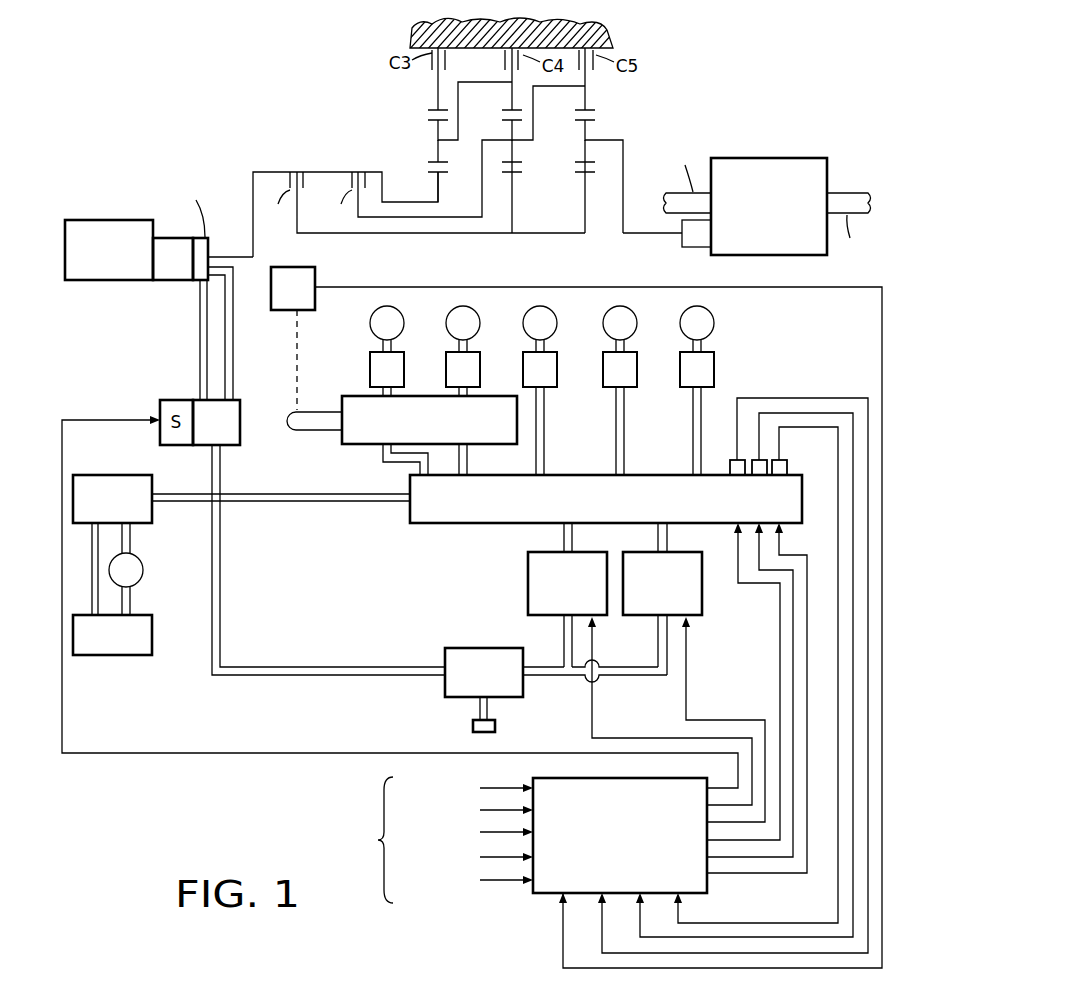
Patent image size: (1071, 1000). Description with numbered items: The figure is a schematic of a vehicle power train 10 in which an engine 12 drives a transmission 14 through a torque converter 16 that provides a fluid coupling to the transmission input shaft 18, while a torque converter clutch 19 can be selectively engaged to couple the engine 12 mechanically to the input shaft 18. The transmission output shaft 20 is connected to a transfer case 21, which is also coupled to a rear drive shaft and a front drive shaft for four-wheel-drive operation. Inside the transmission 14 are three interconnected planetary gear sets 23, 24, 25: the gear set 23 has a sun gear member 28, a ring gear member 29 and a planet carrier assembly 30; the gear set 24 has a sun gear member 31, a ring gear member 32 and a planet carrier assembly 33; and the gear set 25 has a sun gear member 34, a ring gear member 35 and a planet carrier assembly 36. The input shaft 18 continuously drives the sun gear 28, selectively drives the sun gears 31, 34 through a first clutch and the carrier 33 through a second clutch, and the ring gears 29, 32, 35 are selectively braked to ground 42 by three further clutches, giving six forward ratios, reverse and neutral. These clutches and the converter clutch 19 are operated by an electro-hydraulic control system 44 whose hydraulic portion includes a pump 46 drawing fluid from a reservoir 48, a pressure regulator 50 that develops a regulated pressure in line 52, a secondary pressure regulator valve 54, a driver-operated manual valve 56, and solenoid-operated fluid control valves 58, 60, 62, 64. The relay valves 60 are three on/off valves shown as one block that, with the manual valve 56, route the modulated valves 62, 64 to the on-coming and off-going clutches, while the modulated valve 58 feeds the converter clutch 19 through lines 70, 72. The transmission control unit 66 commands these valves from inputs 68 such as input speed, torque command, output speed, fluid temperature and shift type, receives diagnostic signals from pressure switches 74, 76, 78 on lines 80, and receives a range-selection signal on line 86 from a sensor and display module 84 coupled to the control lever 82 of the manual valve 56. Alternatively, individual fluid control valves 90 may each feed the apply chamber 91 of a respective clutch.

The vehicle power train 10 is at (266, 107).
The engine 12 is at (102, 285).
The transmission 14 is at (396, 136).
The torque converter 16 is at (163, 285).
The transmission input shaft 18 is at (268, 170).
The torque converter clutch 19 is at (210, 243).
The transmission output shaft 20 is at (640, 236).
The transfer case 21 is at (750, 157).
The planetary gear set 23 is at (452, 153).
The planetary gear set 24 is at (526, 153).
The planetary gear set 25 is at (600, 128).
The sun gear member 28 is at (430, 172).
The ring gear member 29 is at (432, 108).
The planet carrier assembly 30 is at (457, 140).
The sun gear member 31 is at (522, 180).
The ring gear member 32 is at (506, 110).
The planet carrier assembly 33 is at (532, 140).
The sun gear member 34 is at (592, 180).
The ring gear member 35 is at (596, 110).
The planet carrier assembly 36 is at (618, 147).
The ground 42 is at (612, 36).
The electro-hydraulic control system 44 is at (632, 614).
The pump 46 is at (145, 570).
The reservoir 48 is at (153, 637).
The pressure regulator 50 is at (127, 475).
The line 52 is at (305, 505).
The secondary pressure regulator valve 54 is at (445, 683).
The manual valve 56 is at (365, 447).
The solenoid-operated fluid control valve 58 is at (240, 424).
The relay valves 60 is at (430, 524).
The modulated valve 62 is at (528, 600).
The modulated valve 64 is at (705, 600).
The transmission control unit 66 is at (545, 897).
The inputs 68 is at (440, 840).
The line 70 is at (198, 372).
The line 72 is at (233, 372).
The pressure switch 74 is at (737, 460).
The pressure switch 76 is at (755, 460).
The pressure switch 78 is at (787, 468).
The lines 80 is at (826, 426).
The control lever 82 is at (322, 435).
The sensor and display module 84 is at (317, 273).
The line 86 is at (766, 286).
The fluid control valve 90 is at (416, 336).
The apply chamber 91 is at (368, 328).